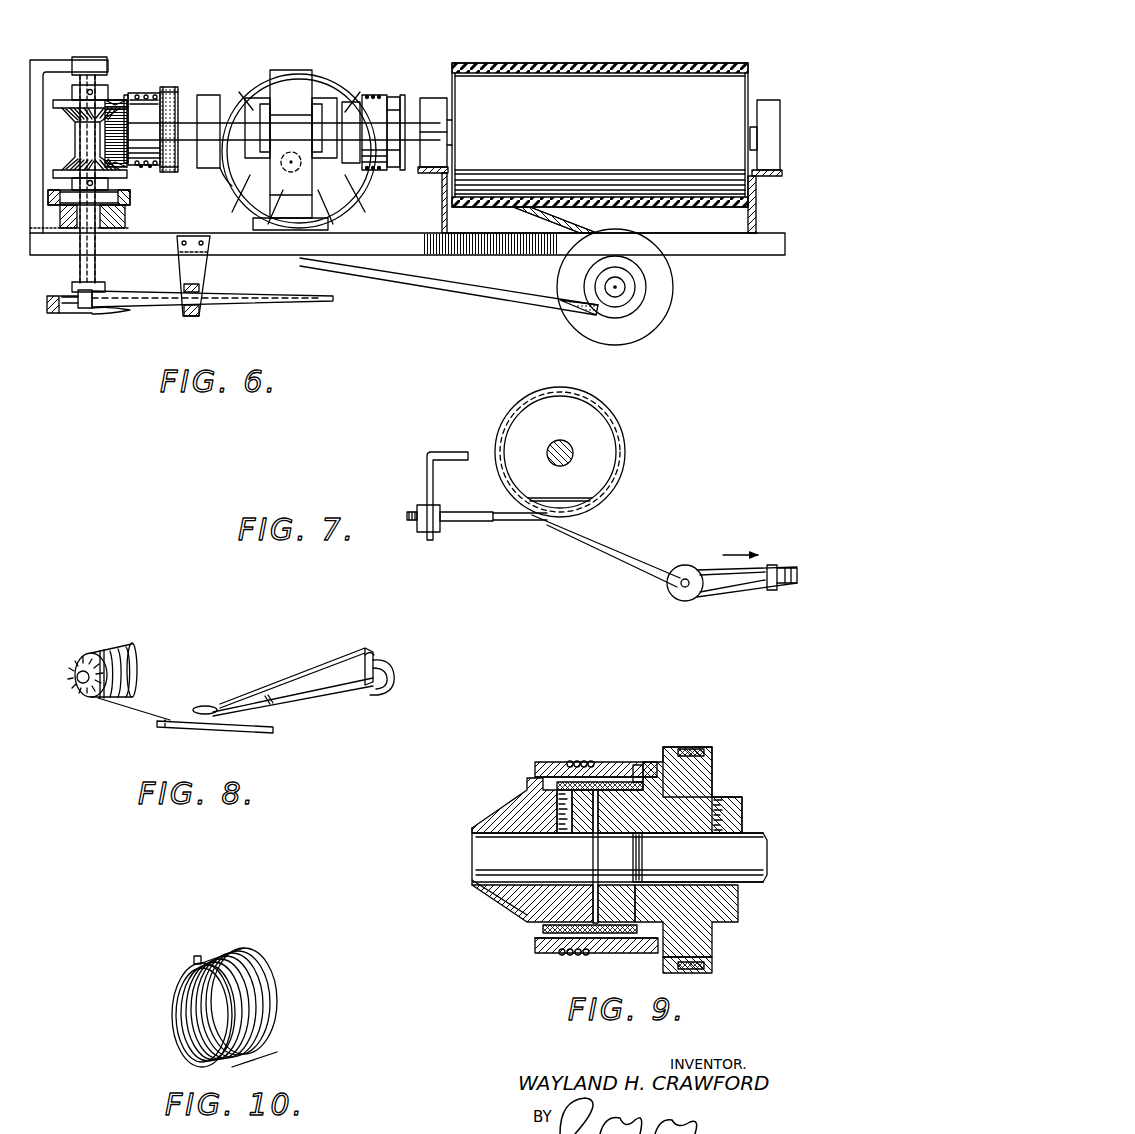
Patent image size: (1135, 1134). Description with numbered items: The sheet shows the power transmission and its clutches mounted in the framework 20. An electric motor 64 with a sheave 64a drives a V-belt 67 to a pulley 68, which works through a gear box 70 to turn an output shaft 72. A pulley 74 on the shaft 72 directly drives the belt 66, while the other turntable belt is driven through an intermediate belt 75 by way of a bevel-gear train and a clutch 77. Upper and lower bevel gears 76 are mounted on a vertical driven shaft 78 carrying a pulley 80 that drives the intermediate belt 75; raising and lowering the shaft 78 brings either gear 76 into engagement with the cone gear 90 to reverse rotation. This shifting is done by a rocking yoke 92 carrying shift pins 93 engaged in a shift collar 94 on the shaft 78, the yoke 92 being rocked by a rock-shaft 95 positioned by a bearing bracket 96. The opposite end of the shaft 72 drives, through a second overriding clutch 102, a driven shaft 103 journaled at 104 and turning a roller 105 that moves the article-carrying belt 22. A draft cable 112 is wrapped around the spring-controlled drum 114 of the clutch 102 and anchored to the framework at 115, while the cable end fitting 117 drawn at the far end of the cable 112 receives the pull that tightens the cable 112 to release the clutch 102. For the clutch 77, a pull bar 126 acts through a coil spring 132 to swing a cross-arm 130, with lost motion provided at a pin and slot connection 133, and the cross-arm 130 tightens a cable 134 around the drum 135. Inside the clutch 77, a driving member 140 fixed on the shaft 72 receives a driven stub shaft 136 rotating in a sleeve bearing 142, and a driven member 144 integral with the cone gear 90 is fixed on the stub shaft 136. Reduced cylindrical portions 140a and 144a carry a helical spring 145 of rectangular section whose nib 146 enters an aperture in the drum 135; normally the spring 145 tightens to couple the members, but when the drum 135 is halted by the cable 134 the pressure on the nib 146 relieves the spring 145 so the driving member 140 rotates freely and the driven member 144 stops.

In FIG. 6, the framework 20 is at (44, 56).
In FIG. 7, the framework 20 is at (422, 465).
In FIG. 8, the framework 20 is at (398, 664).
In FIG. 6, the article-carrying belt 22 is at (702, 65).
In FIG. 6, the electric motor 64 is at (658, 293).
In FIG. 6, the sheave 64a is at (630, 300).
In FIG. 6, the belt 66 is at (166, 92).
In FIG. 9, the belt 66 is at (682, 752).
In FIG. 6, the V-belt 67 is at (517, 292).
In FIG. 6, the pulley 68 is at (321, 86).
In FIG. 6, the gear box 70 is at (340, 78).
In FIG. 6, the output shaft 72 is at (187, 125).
In FIG. 7, the output shaft 72 is at (550, 442).
In FIG. 9, the output shaft 72 is at (757, 855).
In FIG. 6, the pulley 74 is at (170, 88).
In FIG. 9, the pulley 74 is at (712, 753).
In FIG. 6, the intermediate belt 75 is at (104, 198).
In FIG. 6, the bevel gears 76 is at (115, 94).
In FIG. 6, the clutch 77 is at (141, 86).
In FIG. 8, the clutch 77 is at (96, 637).
In FIG. 9, the clutch 77 is at (590, 750).
In FIG. 6, the driven shaft 78 is at (87, 268).
In FIG. 6, the pulley 80 is at (63, 198).
In FIG. 6, the cone gear 90 is at (117, 128).
In FIG. 8, the cone gear 90 is at (98, 697).
In FIG. 9, the cone gear 90 is at (505, 813).
In FIG. 6, the rocking yoke 92 is at (55, 314).
In FIG. 6, the shift pins 93 is at (68, 315).
In FIG. 6, the shift collar 94 is at (108, 312).
In FIG. 6, the rock-shaft 95 is at (290, 302).
In FIG. 6, the bearing bracket 96 is at (197, 273).
In FIG. 6, the overriding spring-energized clutch 102 is at (384, 90).
In FIG. 7, the overriding spring-energized clutch 102 is at (628, 438).
In FIG. 6, the driven shaft 103 is at (448, 138).
In FIG. 6, the journal 104 is at (440, 107).
In FIG. 6, the roller 105 is at (588, 83).
In FIG. 6, the draft cable 112 is at (398, 100).
In FIG. 7, the draft cable 112 is at (637, 553).
In FIG. 6, the spring-controlled drum 114 is at (394, 167).
In FIG. 7, the spring-controlled drum 114 is at (508, 418).
In FIG. 7, the cable anchorage 115 is at (486, 524).
In FIG. 7, the clevis 117 is at (768, 565).
In FIG. 8, the pull bar 126 is at (225, 731).
In FIG. 8, the cross-arm 130 is at (362, 698).
In FIG. 8, the coil spring 132 is at (270, 706).
In FIG. 8, the pin and slot connection 133 is at (205, 706).
In FIG. 6, the cable 134 is at (137, 166).
In FIG. 8, the cable 134 is at (145, 710).
In FIG. 9, the cable 134 is at (572, 762).
In FIG. 6, the drum 135 is at (148, 140).
In FIG. 8, the drum 135 is at (128, 655).
In FIG. 9, the drum 135 is at (533, 767).
In FIG. 8, the driven stub shaft 136 is at (78, 682).
In FIG. 9, the driven stub shaft 136 is at (472, 853).
In FIG. 9, the driving member 140 is at (680, 798).
In FIG. 9, the cylindrical portion 140a is at (633, 810).
In FIG. 9, the sleeve bearing 142 is at (625, 840).
In FIG. 9, the driven member 144 is at (507, 892).
In FIG. 9, the cylindrical portion 144a is at (582, 823).
In FIG. 9, the helical spring 145 is at (617, 783).
In FIG. 10, the helical spring 145 is at (180, 1040).
In FIG. 9, the nib 146 is at (643, 762).
In FIG. 10, the nib 146 is at (194, 958).